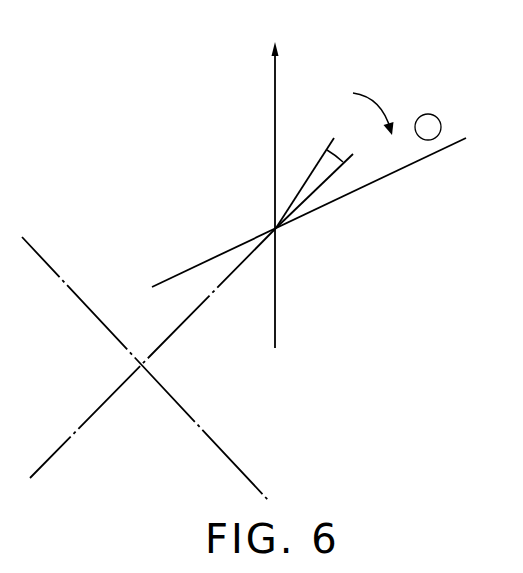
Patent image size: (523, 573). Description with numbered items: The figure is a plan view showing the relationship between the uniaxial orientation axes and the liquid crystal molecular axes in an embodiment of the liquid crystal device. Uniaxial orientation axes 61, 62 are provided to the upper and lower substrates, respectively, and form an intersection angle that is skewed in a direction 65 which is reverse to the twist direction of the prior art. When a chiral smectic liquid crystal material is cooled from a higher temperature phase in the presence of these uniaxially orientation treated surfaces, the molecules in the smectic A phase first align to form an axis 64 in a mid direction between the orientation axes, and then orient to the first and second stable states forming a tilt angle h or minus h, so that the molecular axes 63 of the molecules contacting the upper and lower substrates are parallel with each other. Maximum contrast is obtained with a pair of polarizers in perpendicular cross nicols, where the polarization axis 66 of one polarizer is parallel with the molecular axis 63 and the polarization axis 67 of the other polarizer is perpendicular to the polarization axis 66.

The uniaxial orientation axis 61 is at (277, 84).
The uniaxial orientation axis 62 is at (373, 183).
The liquid crystal molecular axis 63 is at (322, 185).
The smectic A phase axis 64 is at (326, 149).
The skew direction 65 is at (375, 102).
The polarization axis 66 is at (53, 455).
The polarization axis 67 is at (222, 450).
The tilt angle h is at (352, 151).